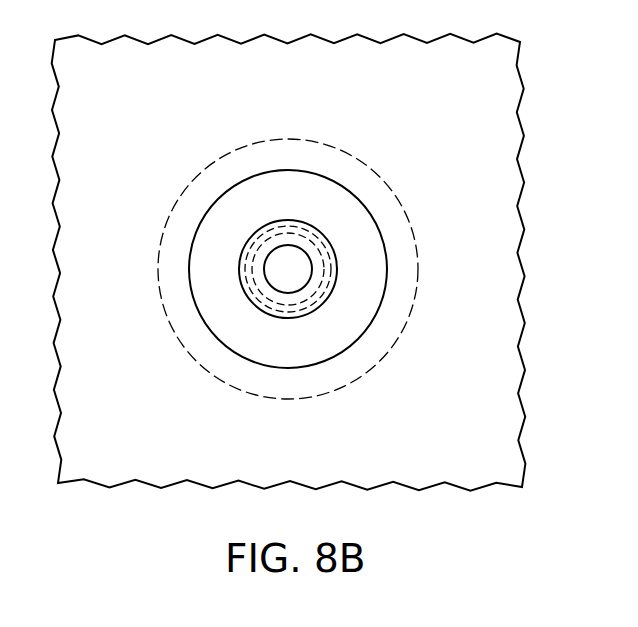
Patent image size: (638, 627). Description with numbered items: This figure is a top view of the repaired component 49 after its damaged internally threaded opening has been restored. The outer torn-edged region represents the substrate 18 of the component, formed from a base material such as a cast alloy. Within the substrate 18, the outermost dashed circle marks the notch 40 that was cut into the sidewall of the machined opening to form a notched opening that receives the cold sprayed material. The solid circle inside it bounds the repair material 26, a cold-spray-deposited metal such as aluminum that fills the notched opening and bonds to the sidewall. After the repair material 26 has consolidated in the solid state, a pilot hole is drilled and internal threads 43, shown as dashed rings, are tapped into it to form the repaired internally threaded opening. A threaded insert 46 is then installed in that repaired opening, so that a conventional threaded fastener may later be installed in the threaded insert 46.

The substrate 18 is at (459, 404).
The repair material 26 is at (293, 170).
The notch 40 is at (222, 158).
The internal threads 43 is at (329, 267).
The threaded insert 46 is at (240, 266).
The repaired component 49 is at (324, 262).